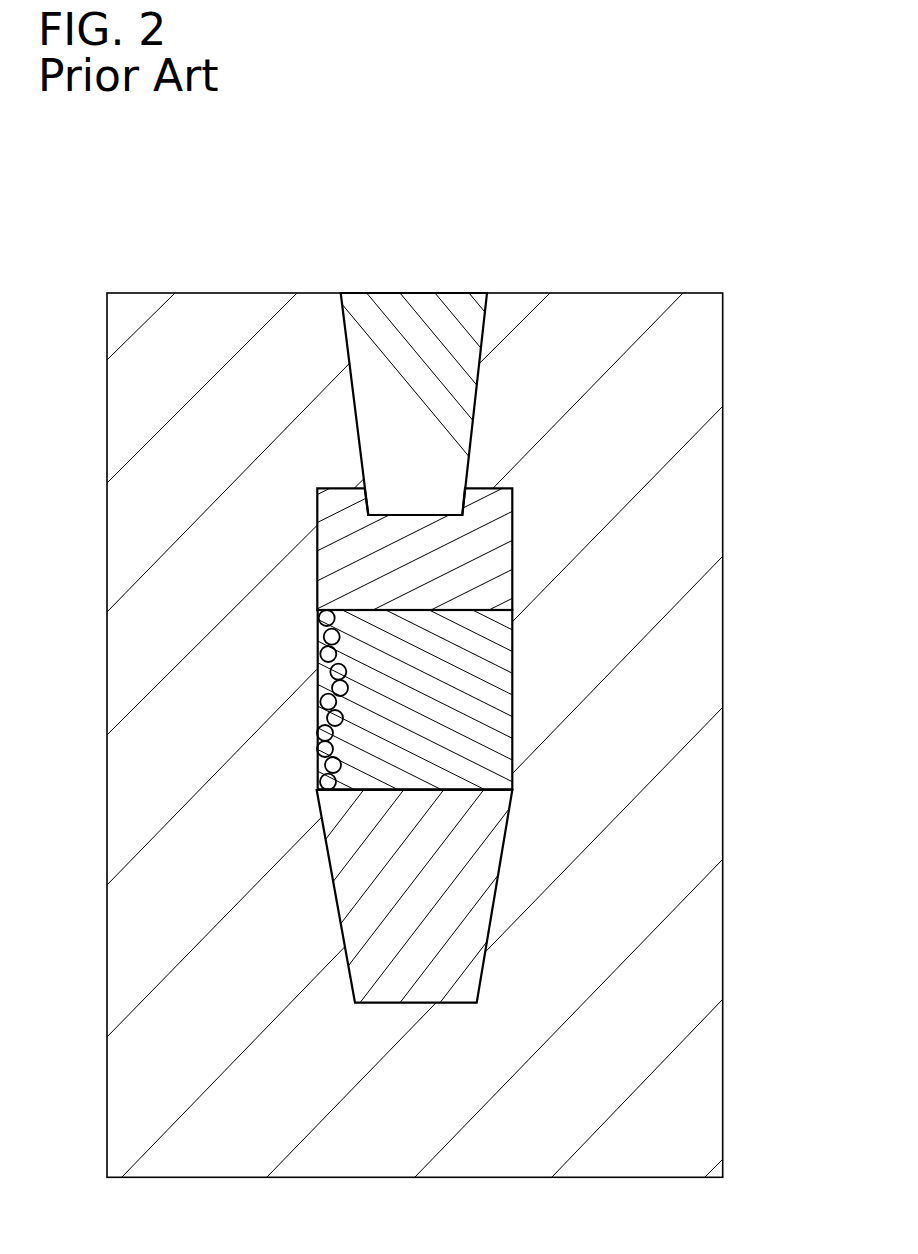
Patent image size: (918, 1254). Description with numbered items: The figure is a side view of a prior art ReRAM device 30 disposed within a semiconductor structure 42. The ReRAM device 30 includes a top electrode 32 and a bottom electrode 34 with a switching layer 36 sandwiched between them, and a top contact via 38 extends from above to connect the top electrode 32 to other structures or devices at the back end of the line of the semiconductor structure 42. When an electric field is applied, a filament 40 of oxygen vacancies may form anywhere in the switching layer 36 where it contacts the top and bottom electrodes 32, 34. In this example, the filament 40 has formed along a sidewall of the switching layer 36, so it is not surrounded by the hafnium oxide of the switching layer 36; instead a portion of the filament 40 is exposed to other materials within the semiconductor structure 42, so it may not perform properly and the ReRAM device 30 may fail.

The ReRAM device 30 is at (455, 217).
The top electrode 32 is at (497, 553).
The bottom electrode 34 is at (485, 858).
The switching layer 36 is at (497, 677).
The top contact via 38 is at (462, 300).
The filament 40 is at (313, 731).
The semiconductor structure 42 is at (725, 1066).